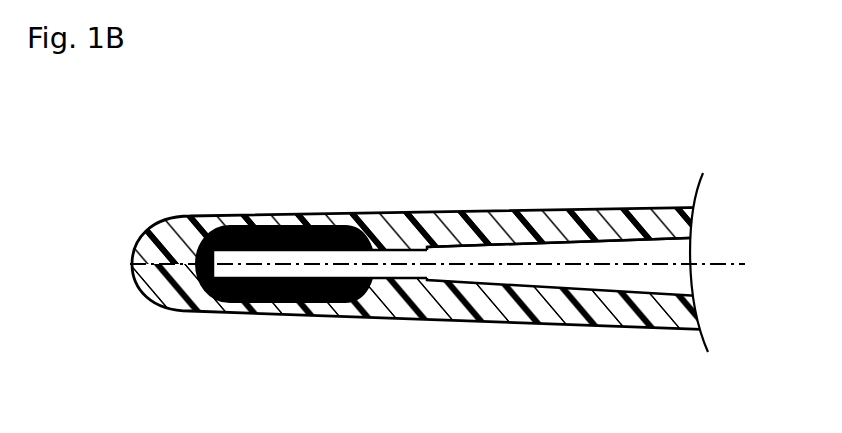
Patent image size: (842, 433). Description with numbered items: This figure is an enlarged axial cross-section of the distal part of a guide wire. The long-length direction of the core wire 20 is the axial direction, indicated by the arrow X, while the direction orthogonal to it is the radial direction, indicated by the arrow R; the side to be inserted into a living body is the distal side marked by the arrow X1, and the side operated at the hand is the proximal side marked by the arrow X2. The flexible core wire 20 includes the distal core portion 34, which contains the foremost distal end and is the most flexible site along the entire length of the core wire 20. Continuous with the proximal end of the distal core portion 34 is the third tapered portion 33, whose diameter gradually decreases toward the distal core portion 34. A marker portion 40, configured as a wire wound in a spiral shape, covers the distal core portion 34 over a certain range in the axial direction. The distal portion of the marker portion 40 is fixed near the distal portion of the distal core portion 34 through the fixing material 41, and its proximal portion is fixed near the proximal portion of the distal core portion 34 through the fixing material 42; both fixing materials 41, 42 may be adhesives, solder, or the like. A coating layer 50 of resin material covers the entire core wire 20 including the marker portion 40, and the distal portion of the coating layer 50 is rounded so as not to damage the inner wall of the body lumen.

The core wire 20 is at (553, 243).
The third tapered portion 33 is at (538, 276).
The distal core portion 34 is at (389, 271).
The marker portion 40 is at (277, 228).
The fixing material 41 is at (201, 229).
The fixing material 42 is at (357, 231).
The coating layer 50 is at (452, 225).
The radial direction R is at (674, 264).
The axial direction X is at (728, 262).
The distal side X1 is at (130, 264).
The proximal side X2 is at (728, 264).